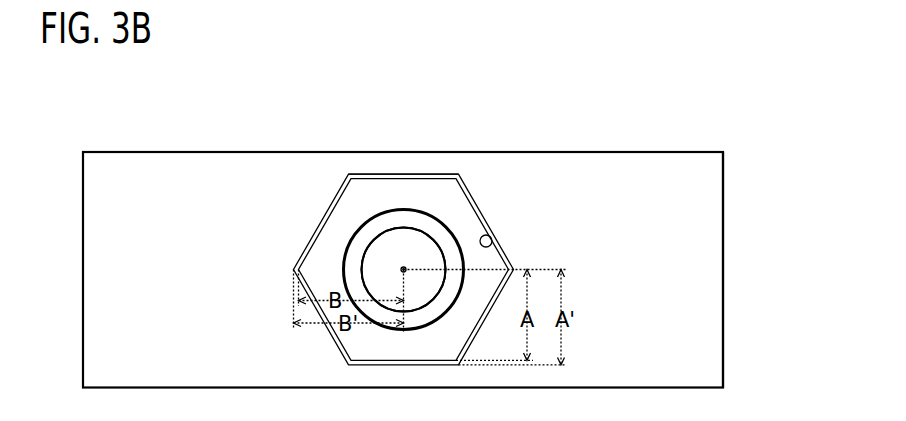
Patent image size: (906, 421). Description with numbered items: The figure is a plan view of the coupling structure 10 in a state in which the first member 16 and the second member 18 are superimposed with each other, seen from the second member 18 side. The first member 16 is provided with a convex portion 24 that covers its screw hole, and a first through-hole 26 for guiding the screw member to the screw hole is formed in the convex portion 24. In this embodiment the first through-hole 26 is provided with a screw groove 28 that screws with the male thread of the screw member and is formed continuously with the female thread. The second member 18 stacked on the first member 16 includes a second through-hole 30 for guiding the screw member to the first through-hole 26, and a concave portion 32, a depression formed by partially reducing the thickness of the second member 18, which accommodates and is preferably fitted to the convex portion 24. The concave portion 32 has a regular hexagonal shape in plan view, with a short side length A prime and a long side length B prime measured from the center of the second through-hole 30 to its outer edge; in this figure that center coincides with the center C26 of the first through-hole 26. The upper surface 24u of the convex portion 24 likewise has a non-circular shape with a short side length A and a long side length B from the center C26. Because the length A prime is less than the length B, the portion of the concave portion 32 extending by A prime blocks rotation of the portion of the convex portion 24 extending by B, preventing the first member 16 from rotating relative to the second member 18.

The coupling structure 10 is at (138, 141).
The first member 16 is at (734, 202).
The second member 18 is at (682, 150).
The convex portion 24 is at (481, 209).
The upper surface 24u is at (384, 260).
The first through-hole 26 is at (427, 253).
The screw groove 28 is at (372, 281).
The second through-hole 30 is at (359, 229).
The concave portion 32 is at (492, 245).
The center of the first through-hole C26 is at (404, 271).